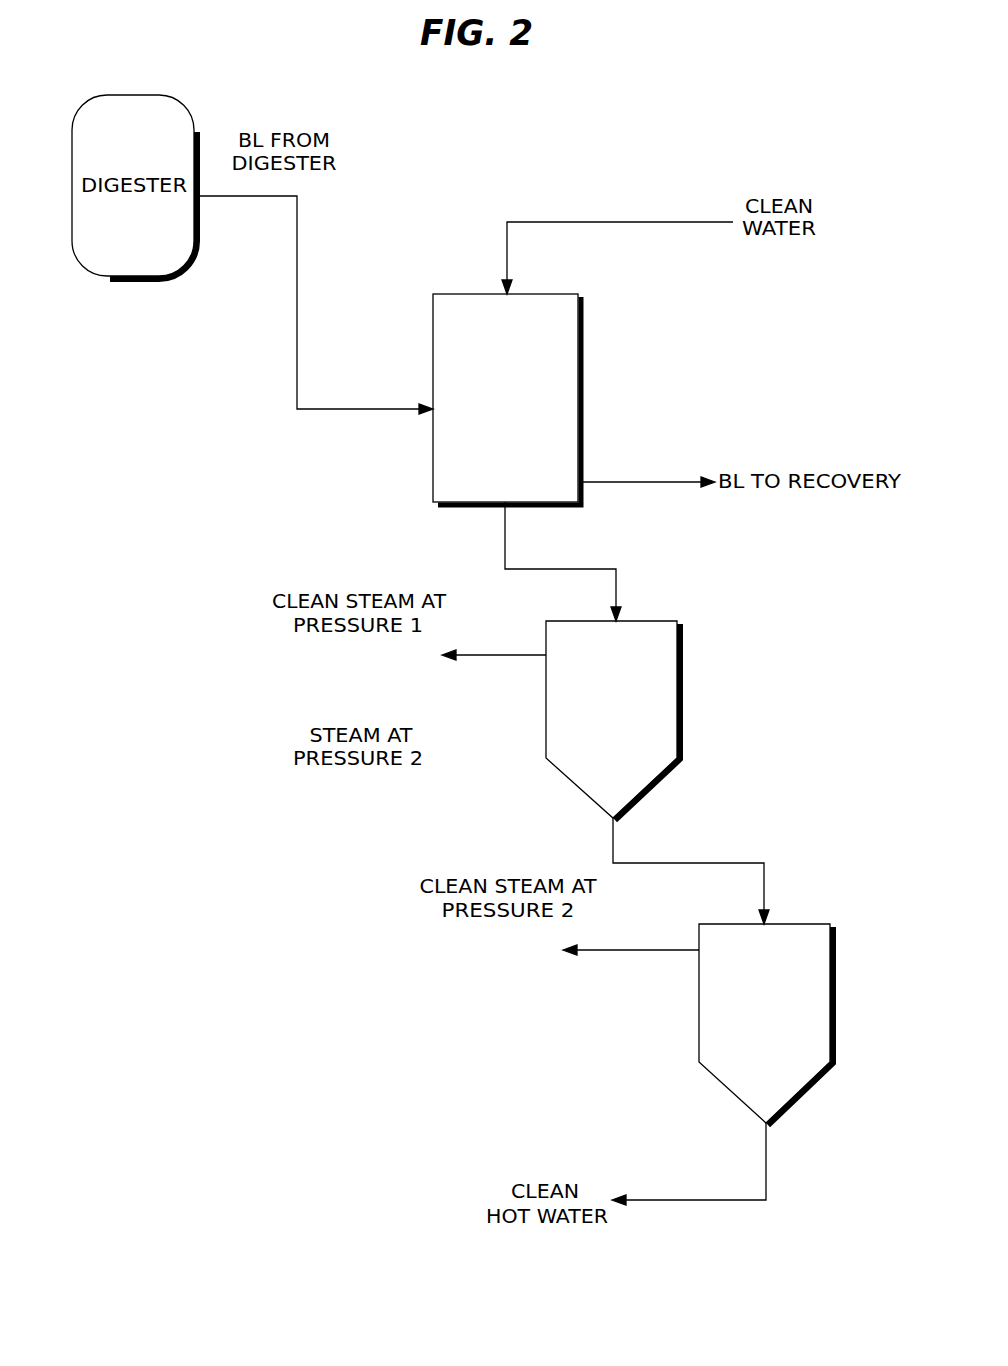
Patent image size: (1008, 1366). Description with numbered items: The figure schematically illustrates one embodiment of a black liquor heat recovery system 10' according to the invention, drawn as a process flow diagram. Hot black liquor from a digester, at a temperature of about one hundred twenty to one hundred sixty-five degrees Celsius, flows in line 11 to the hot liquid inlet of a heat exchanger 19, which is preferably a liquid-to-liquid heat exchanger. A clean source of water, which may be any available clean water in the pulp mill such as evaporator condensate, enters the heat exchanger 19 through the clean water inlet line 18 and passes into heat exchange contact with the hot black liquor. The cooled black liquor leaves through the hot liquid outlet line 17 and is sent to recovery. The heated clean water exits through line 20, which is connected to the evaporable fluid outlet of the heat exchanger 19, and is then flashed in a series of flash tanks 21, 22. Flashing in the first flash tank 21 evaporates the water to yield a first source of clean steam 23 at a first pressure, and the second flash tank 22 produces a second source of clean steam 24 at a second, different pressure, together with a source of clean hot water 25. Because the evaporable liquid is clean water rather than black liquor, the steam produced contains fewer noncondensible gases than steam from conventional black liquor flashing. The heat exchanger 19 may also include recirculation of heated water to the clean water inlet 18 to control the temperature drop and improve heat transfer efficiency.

The system 10' is at (766, 405).
The black liquor line 11 is at (312, 410).
The hot liquid outlet line 17 is at (600, 482).
The clean water inlet line 18 is at (598, 222).
The heat exchanger 19 is at (583, 374).
The heated clean water line 20 is at (618, 587).
The first flash tank 21 is at (683, 702).
The second flash tank 22 is at (836, 1015).
The first steam source 23 is at (453, 659).
The second steam source 24 is at (622, 952).
The hot water source line 25 is at (680, 1201).